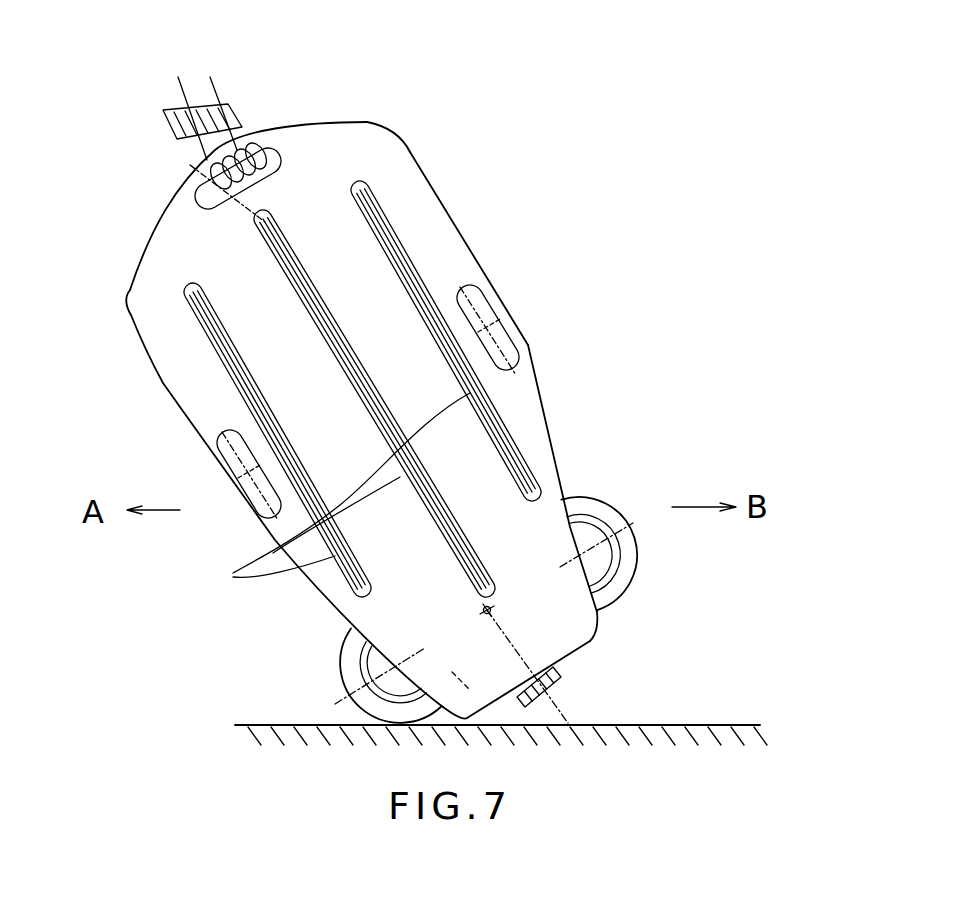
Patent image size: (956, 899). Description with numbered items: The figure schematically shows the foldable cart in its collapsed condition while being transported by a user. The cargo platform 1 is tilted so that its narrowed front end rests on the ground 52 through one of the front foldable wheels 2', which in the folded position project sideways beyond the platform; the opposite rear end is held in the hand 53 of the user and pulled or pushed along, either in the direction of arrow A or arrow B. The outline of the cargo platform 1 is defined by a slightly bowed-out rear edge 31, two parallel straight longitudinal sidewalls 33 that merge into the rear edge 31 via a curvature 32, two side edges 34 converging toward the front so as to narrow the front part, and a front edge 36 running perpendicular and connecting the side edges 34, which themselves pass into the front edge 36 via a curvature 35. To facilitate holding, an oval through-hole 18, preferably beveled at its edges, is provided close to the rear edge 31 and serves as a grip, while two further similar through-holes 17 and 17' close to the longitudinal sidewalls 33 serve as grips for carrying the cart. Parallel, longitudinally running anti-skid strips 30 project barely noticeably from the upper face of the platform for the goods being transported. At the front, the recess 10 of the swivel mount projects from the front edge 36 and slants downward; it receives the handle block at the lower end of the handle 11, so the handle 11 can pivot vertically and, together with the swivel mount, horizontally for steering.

The cargo platform 1 is at (380, 404).
The front foldable wheels 2' is at (489, 610).
The recess 10 is at (558, 678).
The handle 11 is at (570, 727).
The through-hole 17 is at (210, 475).
The through-hole 17' is at (518, 313).
The oval through-hole 18 is at (277, 150).
The anti-skid strips 30 is at (242, 574).
The rear edge 31 is at (165, 210).
The curvature 32 is at (126, 290).
The longitudinal sidewalls 33 is at (160, 378).
The side edges 34 is at (323, 598).
The curvature 35 is at (468, 723).
The front edge 36 is at (567, 662).
The ground 52 is at (732, 725).
The hand 53 is at (233, 140).